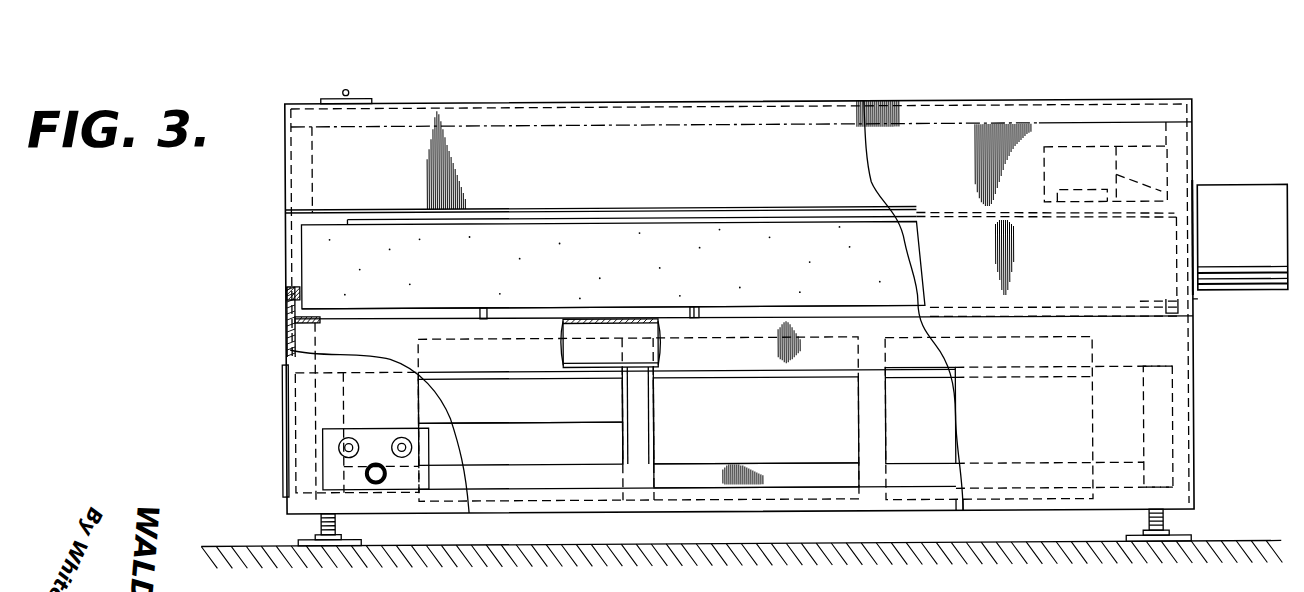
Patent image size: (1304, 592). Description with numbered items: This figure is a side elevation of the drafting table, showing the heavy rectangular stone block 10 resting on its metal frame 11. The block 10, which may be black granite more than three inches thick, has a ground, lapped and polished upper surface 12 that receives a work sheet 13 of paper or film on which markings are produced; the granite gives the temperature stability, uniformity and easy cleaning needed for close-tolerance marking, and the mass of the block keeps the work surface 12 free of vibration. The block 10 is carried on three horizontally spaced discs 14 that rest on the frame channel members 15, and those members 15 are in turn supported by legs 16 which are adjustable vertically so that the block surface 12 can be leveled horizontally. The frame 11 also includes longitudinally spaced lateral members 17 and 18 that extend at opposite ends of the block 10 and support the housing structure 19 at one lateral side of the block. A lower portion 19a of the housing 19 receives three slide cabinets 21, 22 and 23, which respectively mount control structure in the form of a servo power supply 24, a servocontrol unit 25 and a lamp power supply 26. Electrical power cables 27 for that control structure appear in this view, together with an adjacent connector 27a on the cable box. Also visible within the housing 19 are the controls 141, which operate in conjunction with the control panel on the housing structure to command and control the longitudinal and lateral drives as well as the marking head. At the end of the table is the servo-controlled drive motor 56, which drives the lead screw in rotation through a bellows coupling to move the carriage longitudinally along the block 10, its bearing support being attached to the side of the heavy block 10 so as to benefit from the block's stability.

The stone block 10 is at (612, 264).
The metal frame 11 is at (280, 329).
The upper surface 12 is at (377, 223).
The work sheet 13 is at (462, 214).
The discs 14 is at (485, 310).
The frame channel members 15 is at (653, 410).
The legs 16 is at (320, 521).
The lateral member 17 is at (290, 301).
The lateral member 18 is at (1183, 315).
The housing structure 19 is at (1068, 98).
The lower portion of housing 19a is at (989, 418).
The slide cabinet 21 is at (497, 514).
The slide cabinet 22 is at (735, 500).
The slide cabinet 23 is at (955, 514).
The servo power supply 24 is at (579, 457).
The servocontrol unit 25 is at (827, 455).
The lamp power supply 26 is at (917, 457).
The electrical power cables 27 is at (401, 437).
The switch 27a is at (380, 484).
The servo-controlled drive motor 56 is at (1240, 237).
The controls 141 is at (613, 419).